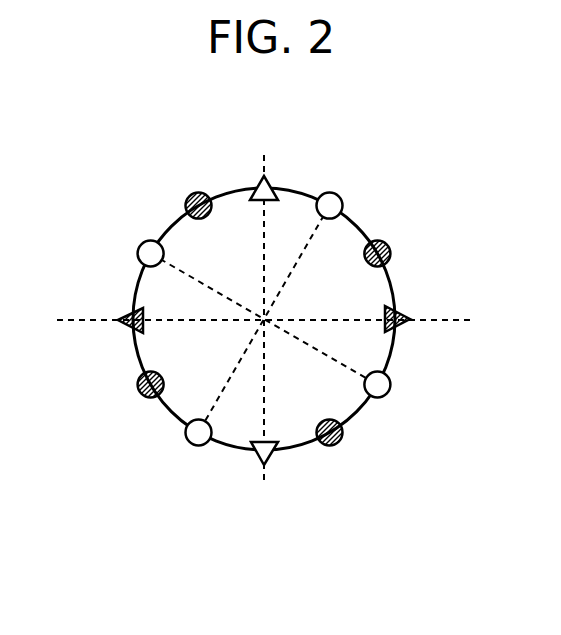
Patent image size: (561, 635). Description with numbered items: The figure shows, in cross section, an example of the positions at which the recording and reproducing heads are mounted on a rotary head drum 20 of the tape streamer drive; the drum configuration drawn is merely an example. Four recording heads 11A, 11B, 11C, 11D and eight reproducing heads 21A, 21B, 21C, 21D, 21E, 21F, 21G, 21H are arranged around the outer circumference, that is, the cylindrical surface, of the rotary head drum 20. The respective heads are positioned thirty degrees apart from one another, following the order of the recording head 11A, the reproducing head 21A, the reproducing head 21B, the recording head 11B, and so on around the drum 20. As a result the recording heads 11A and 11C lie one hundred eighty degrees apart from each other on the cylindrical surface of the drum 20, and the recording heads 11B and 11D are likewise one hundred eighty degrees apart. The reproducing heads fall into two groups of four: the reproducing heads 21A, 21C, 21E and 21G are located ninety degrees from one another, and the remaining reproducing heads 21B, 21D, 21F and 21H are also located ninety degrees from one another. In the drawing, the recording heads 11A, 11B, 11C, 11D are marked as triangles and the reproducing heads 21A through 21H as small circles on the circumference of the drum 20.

The rotary head drum 20 is at (358, 410).
The recording head 11A is at (272, 186).
The recording head 11B is at (406, 314).
The recording head 11C is at (262, 447).
The recording head 11D is at (120, 314).
The reproducing head 21A is at (343, 201).
The reproducing head 21B is at (390, 248).
The reproducing head 21C is at (392, 384).
The reproducing head 21D is at (338, 445).
The reproducing head 21E is at (185, 432).
The reproducing head 21F is at (137, 382).
The reproducing head 21G is at (138, 248).
The reproducing head 21H is at (185, 200).